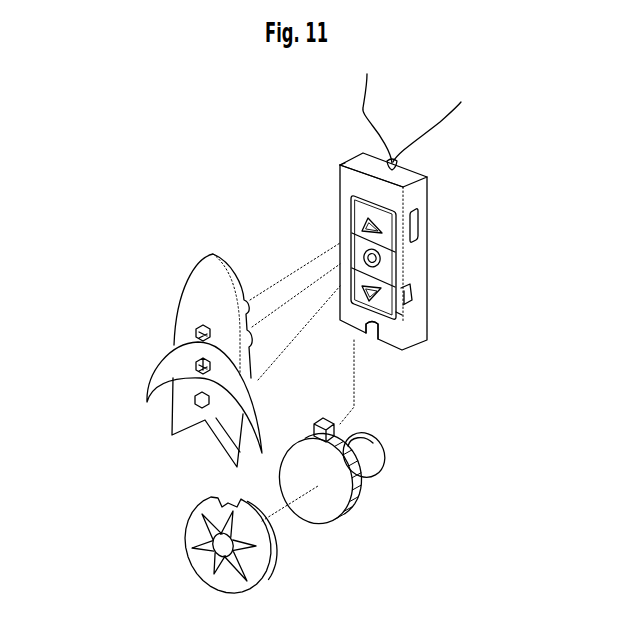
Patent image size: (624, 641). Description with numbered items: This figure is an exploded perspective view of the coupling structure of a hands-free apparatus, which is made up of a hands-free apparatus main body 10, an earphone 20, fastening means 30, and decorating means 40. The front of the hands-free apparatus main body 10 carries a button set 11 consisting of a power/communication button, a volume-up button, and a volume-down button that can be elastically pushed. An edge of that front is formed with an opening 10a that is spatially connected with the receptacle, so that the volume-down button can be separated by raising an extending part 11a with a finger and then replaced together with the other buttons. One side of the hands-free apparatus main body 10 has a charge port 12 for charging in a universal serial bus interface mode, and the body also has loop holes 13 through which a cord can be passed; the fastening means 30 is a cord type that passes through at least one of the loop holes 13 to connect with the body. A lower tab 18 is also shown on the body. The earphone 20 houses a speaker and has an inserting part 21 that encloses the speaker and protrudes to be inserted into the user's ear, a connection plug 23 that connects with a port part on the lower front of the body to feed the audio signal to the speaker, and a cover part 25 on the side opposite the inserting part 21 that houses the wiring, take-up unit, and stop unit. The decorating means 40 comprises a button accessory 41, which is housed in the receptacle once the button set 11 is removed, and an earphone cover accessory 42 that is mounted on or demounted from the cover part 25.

The hands-free apparatus main body 10 is at (342, 153).
The opening 10a is at (408, 291).
The button set 11 is at (350, 214).
The extending part 11a is at (408, 318).
The charge port 12 is at (420, 219).
The loop holes 13 is at (338, 168).
The lower tab 18 is at (376, 348).
The earphone 20 is at (337, 476).
The inserting part 21 is at (366, 451).
The connection plug 23 is at (323, 418).
The cover part 25 is at (366, 493).
The fastening means 30 is at (358, 92).
The decorating means 40 is at (121, 408).
The button accessory 41 is at (182, 297).
The earphone cover accessory 42 is at (183, 520).